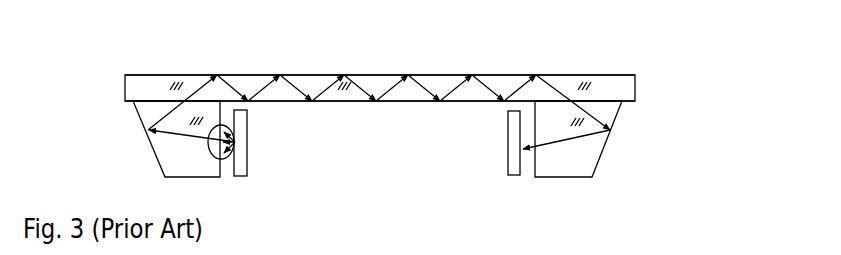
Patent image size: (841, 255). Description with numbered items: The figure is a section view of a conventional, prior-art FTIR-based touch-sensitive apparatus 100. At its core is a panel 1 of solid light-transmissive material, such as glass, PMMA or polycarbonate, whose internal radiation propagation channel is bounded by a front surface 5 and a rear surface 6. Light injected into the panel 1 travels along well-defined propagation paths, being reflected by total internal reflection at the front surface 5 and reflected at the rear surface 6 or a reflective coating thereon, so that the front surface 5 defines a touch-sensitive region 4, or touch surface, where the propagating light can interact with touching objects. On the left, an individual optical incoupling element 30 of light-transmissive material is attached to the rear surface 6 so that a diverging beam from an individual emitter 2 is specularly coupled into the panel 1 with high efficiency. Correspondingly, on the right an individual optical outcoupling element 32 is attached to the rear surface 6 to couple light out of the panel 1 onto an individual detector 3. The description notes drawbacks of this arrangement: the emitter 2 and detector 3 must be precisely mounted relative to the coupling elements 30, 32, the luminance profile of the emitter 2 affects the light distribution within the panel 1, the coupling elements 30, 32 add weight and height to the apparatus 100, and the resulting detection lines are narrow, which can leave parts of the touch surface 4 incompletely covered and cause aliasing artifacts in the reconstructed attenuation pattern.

The touch-sensitive apparatus 100 is at (658, 58).
The panel 1 is at (635, 77).
The emitter 2 is at (242, 155).
The detector 3 is at (512, 148).
The touch-sensitive region 4 is at (440, 69).
The front surface 5 is at (310, 75).
The rear surface 6 is at (355, 101).
The optical incoupling element 30 is at (167, 153).
The optical outcoupling element 32 is at (587, 151).